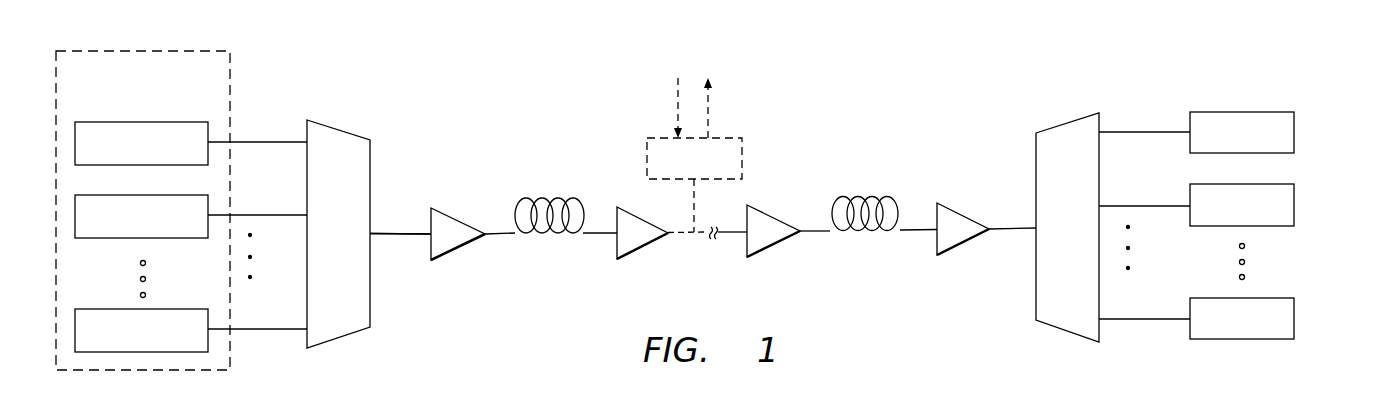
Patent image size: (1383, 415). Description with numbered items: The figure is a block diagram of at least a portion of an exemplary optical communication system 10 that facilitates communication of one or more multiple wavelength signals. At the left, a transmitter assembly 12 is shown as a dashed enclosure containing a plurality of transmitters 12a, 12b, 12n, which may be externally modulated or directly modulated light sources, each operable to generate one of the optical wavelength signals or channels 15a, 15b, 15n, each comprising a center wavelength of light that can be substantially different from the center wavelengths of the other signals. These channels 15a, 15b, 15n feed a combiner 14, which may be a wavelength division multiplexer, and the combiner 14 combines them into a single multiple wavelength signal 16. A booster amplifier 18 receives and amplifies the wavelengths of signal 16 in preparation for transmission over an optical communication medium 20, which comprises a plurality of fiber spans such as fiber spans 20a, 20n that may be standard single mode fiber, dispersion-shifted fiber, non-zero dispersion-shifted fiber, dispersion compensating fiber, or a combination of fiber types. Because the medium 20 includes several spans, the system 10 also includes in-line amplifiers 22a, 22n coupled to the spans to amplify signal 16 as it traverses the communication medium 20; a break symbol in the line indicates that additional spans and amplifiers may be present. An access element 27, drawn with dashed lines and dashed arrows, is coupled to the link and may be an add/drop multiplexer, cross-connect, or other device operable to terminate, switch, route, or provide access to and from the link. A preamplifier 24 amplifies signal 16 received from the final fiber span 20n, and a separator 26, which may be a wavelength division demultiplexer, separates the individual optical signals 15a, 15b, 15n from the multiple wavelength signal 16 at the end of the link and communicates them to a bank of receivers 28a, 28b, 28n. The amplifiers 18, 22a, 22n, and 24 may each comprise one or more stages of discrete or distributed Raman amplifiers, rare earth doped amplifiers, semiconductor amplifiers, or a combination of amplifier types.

The optical communication system 10 is at (438, 79).
The transmitter assembly 12 is at (216, 86).
The transmitter 12a is at (142, 121).
The transmitter 12b is at (178, 238).
The transmitter 12n is at (108, 309).
The combiner 14 is at (351, 268).
The optical wavelength signal 15a is at (293, 141).
The optical wavelength signal 15b is at (293, 215).
The optical wavelength signal 15n is at (293, 329).
The multiple wavelength signal 16 is at (395, 237).
The booster amplifier 18 is at (457, 218).
The optical communication medium 20 is at (785, 93).
The fiber span 20a is at (542, 199).
The fiber span 20n is at (873, 197).
The in-line amplifier 22a is at (643, 250).
The in-line amplifier 22n is at (772, 250).
The preamplifier 24 is at (967, 210).
The separator 26 is at (1081, 258).
The access element 27 is at (742, 160).
The receiver 28a is at (1294, 131).
The receiver 28b is at (1294, 204).
The receiver 28n is at (1294, 322).